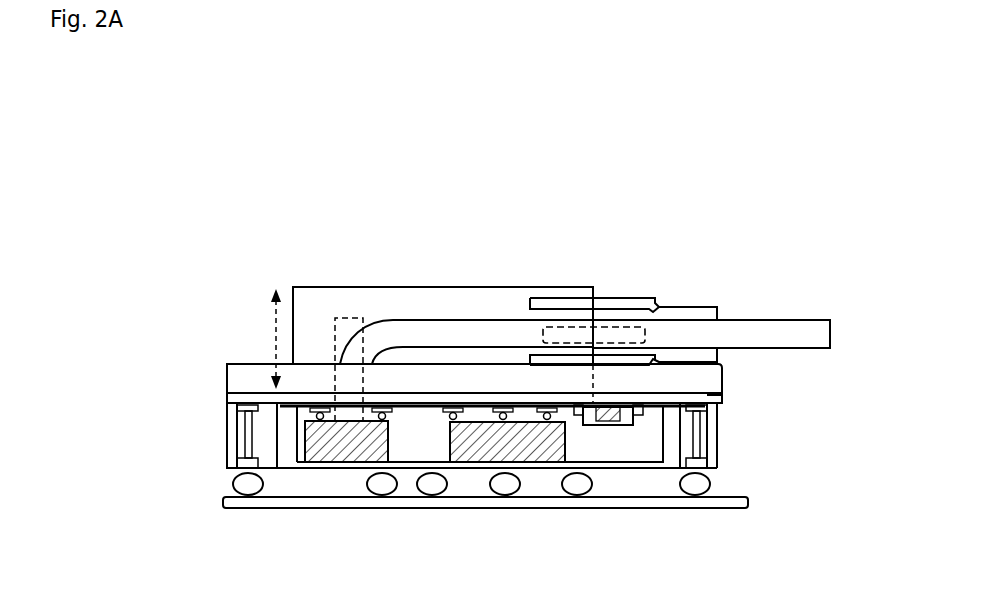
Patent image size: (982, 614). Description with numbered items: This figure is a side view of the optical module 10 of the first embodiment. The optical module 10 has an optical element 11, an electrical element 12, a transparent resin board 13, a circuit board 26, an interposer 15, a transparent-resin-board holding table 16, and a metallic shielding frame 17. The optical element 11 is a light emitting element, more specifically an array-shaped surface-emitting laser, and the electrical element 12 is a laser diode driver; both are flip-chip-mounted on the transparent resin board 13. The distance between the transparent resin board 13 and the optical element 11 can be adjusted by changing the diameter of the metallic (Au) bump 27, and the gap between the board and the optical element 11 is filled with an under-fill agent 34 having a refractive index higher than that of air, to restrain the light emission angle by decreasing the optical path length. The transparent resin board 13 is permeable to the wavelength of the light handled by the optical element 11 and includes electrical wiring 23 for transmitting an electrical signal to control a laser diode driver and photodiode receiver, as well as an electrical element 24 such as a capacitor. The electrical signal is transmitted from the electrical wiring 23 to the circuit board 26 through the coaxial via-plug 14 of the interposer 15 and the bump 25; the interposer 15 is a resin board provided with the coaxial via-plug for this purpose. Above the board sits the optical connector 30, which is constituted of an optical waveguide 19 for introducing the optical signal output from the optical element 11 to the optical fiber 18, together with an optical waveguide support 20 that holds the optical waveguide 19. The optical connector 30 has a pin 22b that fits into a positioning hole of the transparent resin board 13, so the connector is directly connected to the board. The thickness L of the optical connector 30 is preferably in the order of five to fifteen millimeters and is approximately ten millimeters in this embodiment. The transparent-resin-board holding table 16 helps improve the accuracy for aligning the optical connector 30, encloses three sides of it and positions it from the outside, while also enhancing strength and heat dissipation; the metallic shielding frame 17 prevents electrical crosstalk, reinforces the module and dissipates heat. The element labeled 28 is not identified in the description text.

The optical module 10 is at (566, 206).
The optical element 11 is at (352, 462).
The electrical element 12 is at (479, 462).
The transparent resin board 13 is at (235, 398).
The coaxial via-plug 14 is at (237, 440).
The interposer 15 is at (722, 438).
The transparent-resin-board holding table 16 is at (242, 370).
The metallic shielding frame 17 is at (286, 458).
The optical fiber 18 is at (797, 328).
The optical waveguide 19 is at (499, 325).
The optical waveguide support 20 is at (311, 290).
The pin 22b is at (363, 318).
The electrical wiring 23 is at (708, 395).
The electrical element 24 is at (607, 427).
The bump 25 is at (232, 488).
The circuit board 26 is at (741, 508).
The metallic (Au) bump 27 is at (550, 462).
The fiber clamp 28 is at (697, 306).
The optical connector 30 is at (463, 279).
The under-fill agent 34 is at (348, 407).
The thickness L is at (267, 339).